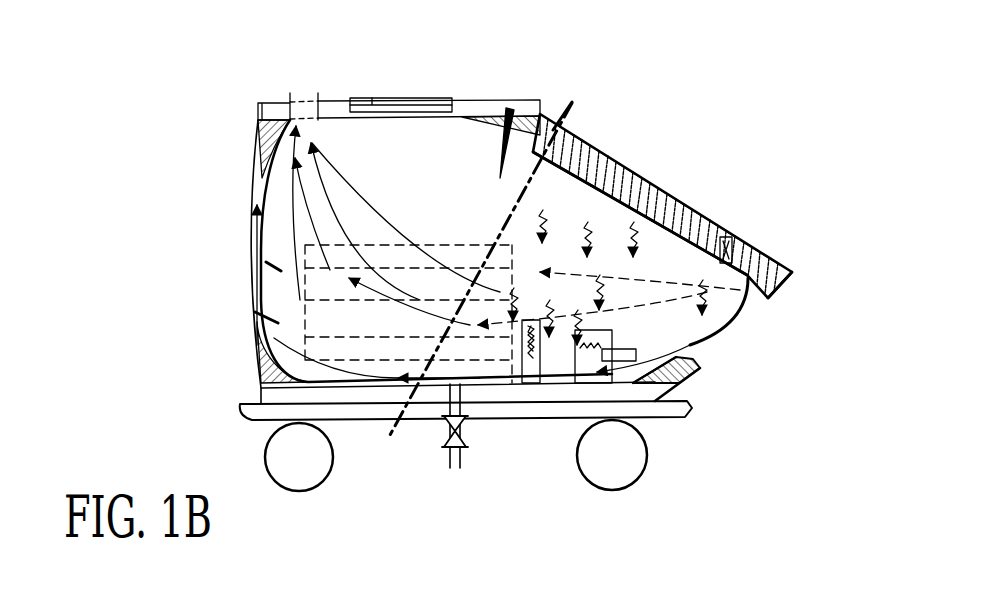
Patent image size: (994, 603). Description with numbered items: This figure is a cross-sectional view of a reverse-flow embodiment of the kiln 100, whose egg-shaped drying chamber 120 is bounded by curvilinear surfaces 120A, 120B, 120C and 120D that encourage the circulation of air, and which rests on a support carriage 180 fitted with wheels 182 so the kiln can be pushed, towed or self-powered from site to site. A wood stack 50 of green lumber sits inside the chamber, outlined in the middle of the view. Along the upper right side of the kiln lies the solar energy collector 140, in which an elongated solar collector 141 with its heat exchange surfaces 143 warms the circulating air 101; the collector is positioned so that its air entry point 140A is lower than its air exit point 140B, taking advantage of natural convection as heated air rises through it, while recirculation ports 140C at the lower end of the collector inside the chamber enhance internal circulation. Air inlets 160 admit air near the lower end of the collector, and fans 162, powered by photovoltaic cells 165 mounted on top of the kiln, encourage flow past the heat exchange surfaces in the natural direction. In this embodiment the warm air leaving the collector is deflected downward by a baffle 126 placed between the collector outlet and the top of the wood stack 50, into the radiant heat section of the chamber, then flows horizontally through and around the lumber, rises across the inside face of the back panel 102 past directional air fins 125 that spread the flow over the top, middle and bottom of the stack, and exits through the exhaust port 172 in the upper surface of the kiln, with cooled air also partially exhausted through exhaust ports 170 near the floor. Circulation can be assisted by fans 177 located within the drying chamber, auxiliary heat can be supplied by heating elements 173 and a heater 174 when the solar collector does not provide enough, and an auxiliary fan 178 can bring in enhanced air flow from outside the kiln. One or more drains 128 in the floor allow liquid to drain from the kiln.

The kiln 100 is at (772, 382).
The circulating air 101 is at (293, 248).
The back panel 102 is at (255, 248).
The drying chamber 120 is at (420, 188).
The curvilinear surface 120A is at (260, 103).
The curvilinear surface 120B is at (257, 357).
The curvilinear surface 120C is at (692, 373).
The curvilinear surface 120D is at (510, 130).
The directional air fins 125 is at (232, 331).
The baffle 126 is at (500, 147).
The drain 128 is at (468, 438).
The solar energy collector 140 is at (745, 168).
The air entry point 140A is at (757, 306).
The air exit point 140B is at (560, 127).
The recirculation ports 140C is at (745, 276).
The solar collector 141 is at (647, 177).
The heat exchange surfaces 143 is at (562, 152).
The air inlets 160 is at (775, 326).
The fans 162 is at (757, 248).
The photovoltaic cells 165 is at (393, 97).
The exhaust ports 170 is at (713, 358).
The exhaust port 172 is at (302, 118).
The heating elements 173 is at (528, 383).
The heater 174 is at (605, 355).
The fans 177 is at (537, 383).
The auxiliary fan 178 is at (676, 400).
The support carriage 180 is at (665, 380).
The wheels 182 is at (298, 455).
The wood stack 50 is at (408, 289).